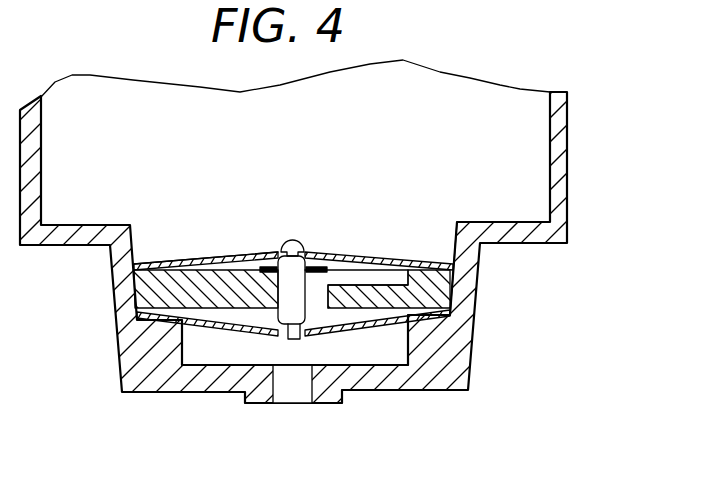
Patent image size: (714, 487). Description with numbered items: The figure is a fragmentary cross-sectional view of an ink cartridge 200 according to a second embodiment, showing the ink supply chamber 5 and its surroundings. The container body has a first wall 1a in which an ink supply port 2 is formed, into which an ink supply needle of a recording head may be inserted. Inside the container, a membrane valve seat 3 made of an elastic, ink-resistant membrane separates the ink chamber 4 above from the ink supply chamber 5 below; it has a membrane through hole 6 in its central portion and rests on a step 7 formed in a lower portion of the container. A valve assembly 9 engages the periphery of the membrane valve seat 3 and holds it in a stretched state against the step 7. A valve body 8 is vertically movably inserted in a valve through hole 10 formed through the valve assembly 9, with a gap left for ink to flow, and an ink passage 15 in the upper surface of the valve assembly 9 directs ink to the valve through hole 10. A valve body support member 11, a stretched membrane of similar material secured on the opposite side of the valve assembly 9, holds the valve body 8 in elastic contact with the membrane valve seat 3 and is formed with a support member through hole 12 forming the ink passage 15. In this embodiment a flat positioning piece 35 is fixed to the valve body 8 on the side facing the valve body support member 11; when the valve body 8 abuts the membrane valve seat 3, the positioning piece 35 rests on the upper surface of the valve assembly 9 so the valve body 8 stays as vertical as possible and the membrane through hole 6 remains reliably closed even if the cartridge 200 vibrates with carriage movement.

The ink cartridge 200 is at (569, 167).
The first wall 1a is at (390, 392).
The ink supply port 2 is at (302, 393).
The membrane valve seat 3 is at (210, 322).
The ink chamber 4 is at (527, 122).
The ink supply chamber 5 is at (412, 352).
The membrane through hole 6 is at (289, 367).
The step 7 is at (450, 338).
The valve body 8 is at (298, 307).
The valve assembly 9 is at (427, 290).
The valve through hole 10 is at (267, 327).
The valve body support member 11 is at (197, 262).
The support member through hole 12 is at (248, 253).
The ink passage 15 is at (373, 275).
The positioning piece 35 is at (318, 250).